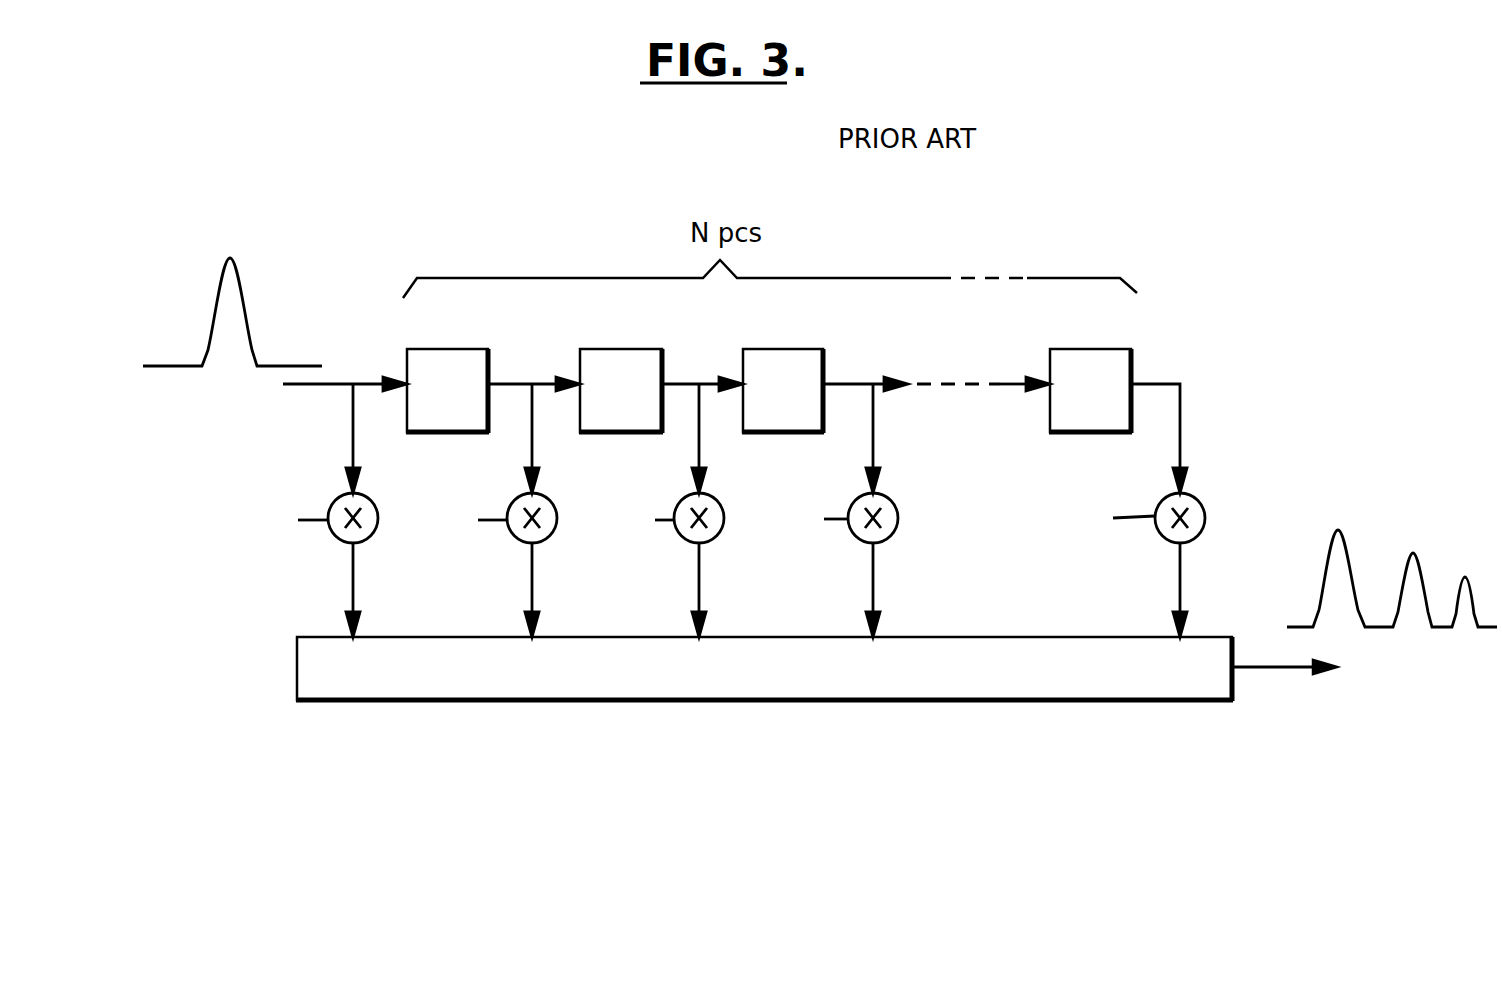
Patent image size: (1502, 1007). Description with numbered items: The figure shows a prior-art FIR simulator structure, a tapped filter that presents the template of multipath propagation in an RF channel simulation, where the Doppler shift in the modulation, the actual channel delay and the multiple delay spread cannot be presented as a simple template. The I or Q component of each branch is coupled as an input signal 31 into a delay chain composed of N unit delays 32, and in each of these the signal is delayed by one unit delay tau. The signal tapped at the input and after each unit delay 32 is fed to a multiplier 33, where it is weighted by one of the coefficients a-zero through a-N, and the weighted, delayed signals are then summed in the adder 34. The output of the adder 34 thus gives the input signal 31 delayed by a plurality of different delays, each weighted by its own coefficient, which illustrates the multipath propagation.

The input signal 31 is at (340, 383).
The unit delay 32 is at (462, 348).
The multiplier 33 is at (377, 508).
The adder 34 is at (1028, 700).